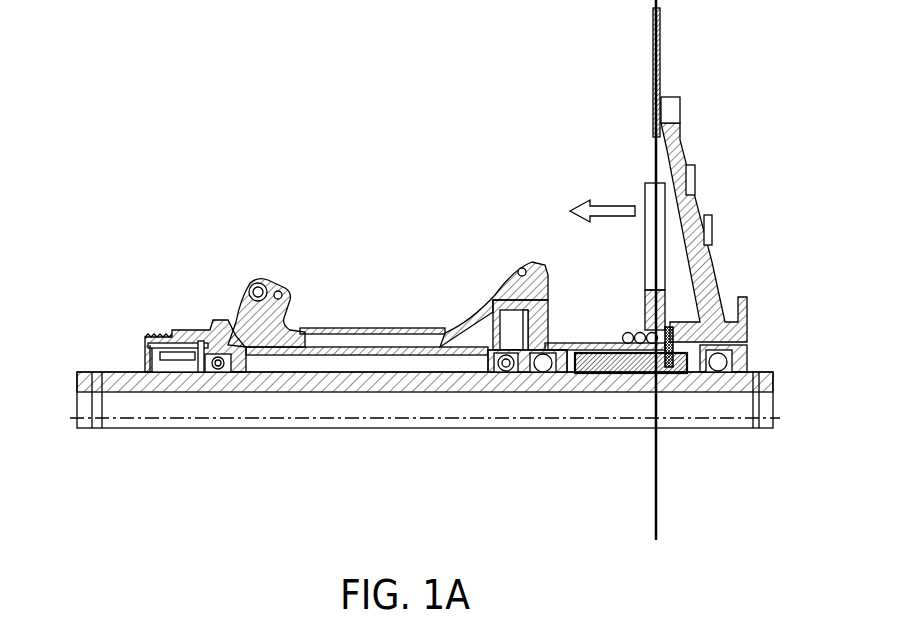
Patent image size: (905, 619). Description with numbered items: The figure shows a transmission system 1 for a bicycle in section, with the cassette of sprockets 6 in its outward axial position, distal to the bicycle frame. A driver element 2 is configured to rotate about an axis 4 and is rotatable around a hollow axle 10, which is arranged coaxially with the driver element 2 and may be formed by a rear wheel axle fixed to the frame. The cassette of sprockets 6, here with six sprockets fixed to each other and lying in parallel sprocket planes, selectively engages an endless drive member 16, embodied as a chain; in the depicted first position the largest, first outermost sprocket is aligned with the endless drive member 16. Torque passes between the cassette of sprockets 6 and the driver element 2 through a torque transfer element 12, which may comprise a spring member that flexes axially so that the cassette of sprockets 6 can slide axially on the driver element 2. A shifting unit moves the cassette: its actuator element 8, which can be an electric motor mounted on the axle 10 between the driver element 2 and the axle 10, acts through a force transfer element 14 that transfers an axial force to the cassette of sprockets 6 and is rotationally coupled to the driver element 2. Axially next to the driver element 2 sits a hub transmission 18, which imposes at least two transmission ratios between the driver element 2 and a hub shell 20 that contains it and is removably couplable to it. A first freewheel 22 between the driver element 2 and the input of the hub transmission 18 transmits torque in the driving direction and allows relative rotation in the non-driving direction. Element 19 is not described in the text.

The transmission system 1 is at (325, 95).
The driver element 2 is at (750, 348).
The axis 4 is at (300, 430).
The cassette of sprockets 6 is at (712, 258).
The actuator element 8 is at (624, 375).
The axle 10 is at (190, 392).
The torque transfer element 12 is at (627, 330).
The force transfer element 14 is at (675, 355).
The endless drive member 16 is at (660, 500).
The hub transmission 18 is at (437, 360).
The lever plate 19 is at (383, 353).
The hub shell 20 is at (237, 300).
The first freewheel 22 is at (492, 320).